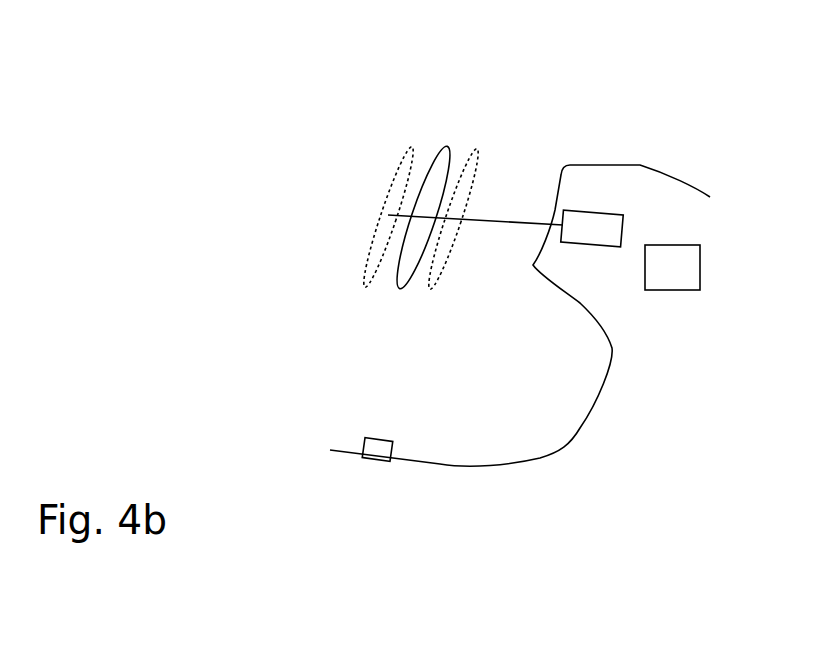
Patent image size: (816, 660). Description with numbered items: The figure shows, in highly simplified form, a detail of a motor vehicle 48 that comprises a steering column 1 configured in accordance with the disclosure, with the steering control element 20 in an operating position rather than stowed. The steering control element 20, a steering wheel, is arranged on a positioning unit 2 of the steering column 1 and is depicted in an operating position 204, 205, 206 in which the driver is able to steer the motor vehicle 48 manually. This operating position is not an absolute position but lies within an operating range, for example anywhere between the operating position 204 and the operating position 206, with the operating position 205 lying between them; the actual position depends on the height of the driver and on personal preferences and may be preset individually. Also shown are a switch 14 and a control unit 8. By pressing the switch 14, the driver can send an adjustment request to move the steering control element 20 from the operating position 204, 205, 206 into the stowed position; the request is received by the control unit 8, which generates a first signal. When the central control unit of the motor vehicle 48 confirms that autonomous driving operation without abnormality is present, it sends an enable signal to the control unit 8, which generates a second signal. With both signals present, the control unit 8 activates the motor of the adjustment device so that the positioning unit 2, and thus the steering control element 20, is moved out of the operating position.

The steering column 1 is at (597, 210).
The positioning unit 2 is at (510, 220).
The control unit 8 is at (692, 286).
The switch 14 is at (362, 450).
The steering control element 20 is at (397, 237).
The motor vehicle 48 is at (663, 198).
The operating position 204 is at (355, 265).
The operating position 205 is at (405, 295).
The operating position 206 is at (445, 280).